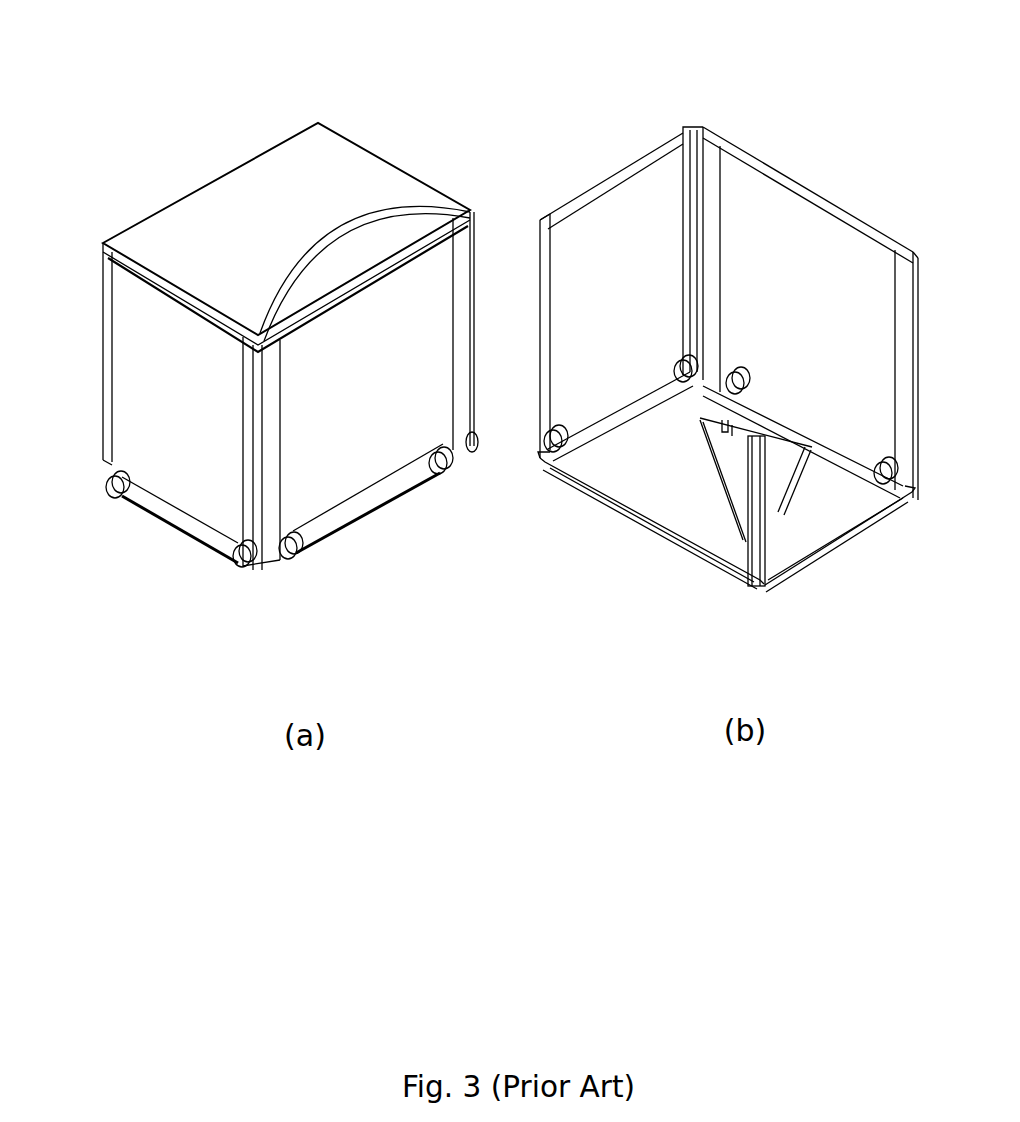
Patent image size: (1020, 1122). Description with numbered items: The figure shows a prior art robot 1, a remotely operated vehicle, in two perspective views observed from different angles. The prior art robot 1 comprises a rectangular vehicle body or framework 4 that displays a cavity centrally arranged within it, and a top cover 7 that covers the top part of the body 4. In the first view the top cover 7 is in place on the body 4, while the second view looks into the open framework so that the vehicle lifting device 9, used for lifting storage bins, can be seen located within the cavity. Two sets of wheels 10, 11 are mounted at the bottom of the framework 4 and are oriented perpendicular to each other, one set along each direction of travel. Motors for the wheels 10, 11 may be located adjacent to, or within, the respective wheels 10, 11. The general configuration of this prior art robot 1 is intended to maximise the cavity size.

The prior art robot 1 is at (404, 110).
The rectangular vehicle body or framework 4 is at (155, 416).
The top cover 7 is at (257, 224).
The vehicle lifting device 9 is at (695, 396).
The wheels 10 is at (446, 485).
The wheels 11 is at (113, 482).